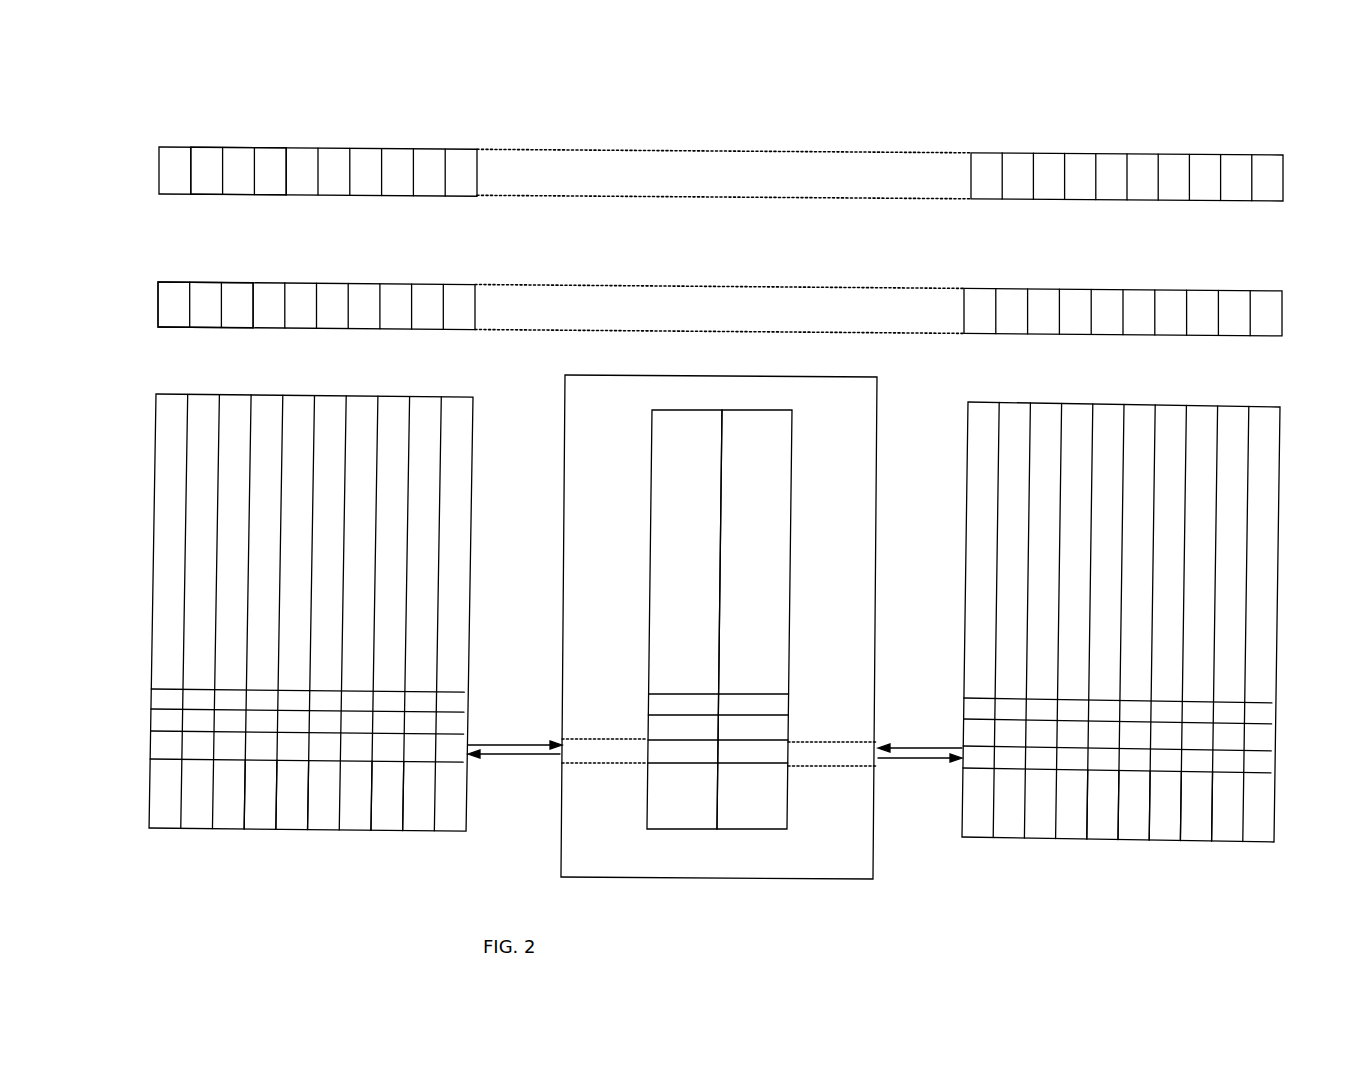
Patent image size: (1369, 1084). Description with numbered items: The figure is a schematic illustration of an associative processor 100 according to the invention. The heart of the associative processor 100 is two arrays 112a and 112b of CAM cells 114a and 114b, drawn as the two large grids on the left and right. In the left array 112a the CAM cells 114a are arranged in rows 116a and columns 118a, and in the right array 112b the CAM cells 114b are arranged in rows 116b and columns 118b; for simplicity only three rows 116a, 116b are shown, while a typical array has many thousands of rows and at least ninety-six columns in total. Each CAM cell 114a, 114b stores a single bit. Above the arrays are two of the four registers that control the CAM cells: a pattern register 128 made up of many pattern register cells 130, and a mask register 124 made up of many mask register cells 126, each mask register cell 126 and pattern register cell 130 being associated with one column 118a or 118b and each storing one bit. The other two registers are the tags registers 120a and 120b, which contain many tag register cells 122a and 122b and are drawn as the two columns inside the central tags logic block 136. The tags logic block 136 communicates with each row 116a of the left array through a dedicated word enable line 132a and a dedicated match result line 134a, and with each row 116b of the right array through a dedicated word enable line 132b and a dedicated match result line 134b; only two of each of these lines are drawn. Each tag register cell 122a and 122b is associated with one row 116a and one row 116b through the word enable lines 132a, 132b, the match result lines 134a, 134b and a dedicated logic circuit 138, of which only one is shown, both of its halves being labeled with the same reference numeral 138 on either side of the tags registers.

The associative processor 100 is at (1313, 152).
The array 112a is at (476, 406).
The array 112b is at (972, 413).
The CAM cells 114a is at (412, 754).
The CAM cells 114b is at (1167, 772).
The rows 116a is at (155, 748).
The rows 116b is at (1272, 762).
The columns 118a is at (320, 823).
The columns 118b is at (1165, 837).
The tags register 120a is at (657, 444).
The tags register 120b is at (791, 444).
The tag register cells 122a is at (683, 729).
The tag register cells 122b is at (753, 729).
The mask register 124 is at (748, 295).
The mask register cells 126 is at (245, 292).
The pattern register 128 is at (757, 158).
The pattern register cells 130 is at (269, 158).
The word enable line 132a is at (515, 736).
The word enable line 132b is at (920, 740).
The match result line 134a is at (514, 761).
The match result line 134b is at (920, 766).
The tags logic block 136 is at (719, 627).
The logic circuit 138 is at (719, 752).